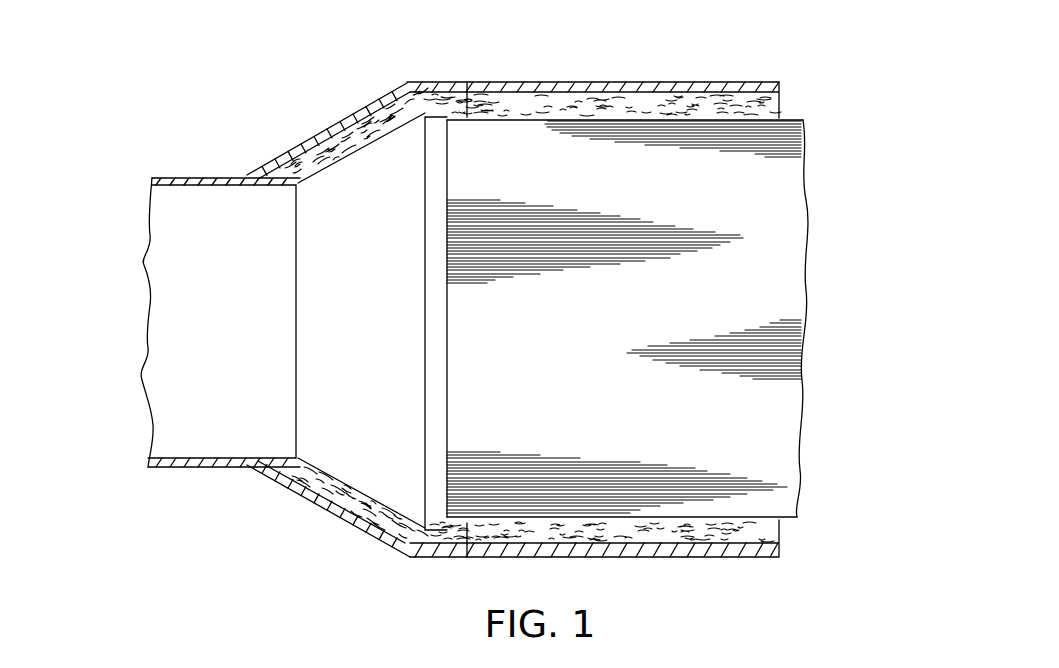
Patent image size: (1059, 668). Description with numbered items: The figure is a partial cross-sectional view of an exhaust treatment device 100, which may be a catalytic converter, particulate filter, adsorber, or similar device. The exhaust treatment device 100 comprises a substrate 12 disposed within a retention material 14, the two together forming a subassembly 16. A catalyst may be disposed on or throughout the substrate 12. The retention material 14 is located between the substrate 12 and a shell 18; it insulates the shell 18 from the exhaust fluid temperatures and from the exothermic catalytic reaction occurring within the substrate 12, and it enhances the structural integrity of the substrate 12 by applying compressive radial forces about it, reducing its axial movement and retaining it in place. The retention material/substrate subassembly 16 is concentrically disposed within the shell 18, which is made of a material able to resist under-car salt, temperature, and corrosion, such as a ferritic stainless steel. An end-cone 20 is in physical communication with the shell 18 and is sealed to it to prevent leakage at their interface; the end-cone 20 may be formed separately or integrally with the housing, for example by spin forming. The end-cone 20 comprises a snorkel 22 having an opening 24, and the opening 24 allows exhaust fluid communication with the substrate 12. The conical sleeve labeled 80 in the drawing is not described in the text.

The exhaust treatment device 100 is at (197, 92).
The substrate 12 is at (805, 147).
The retention material 14 is at (690, 103).
The subassembly 16 is at (543, 326).
The shell 18 is at (468, 83).
The end-cone 20 is at (360, 530).
The snorkel 22 is at (192, 467).
The opening 24 is at (143, 262).
The end cone 80 is at (350, 131).